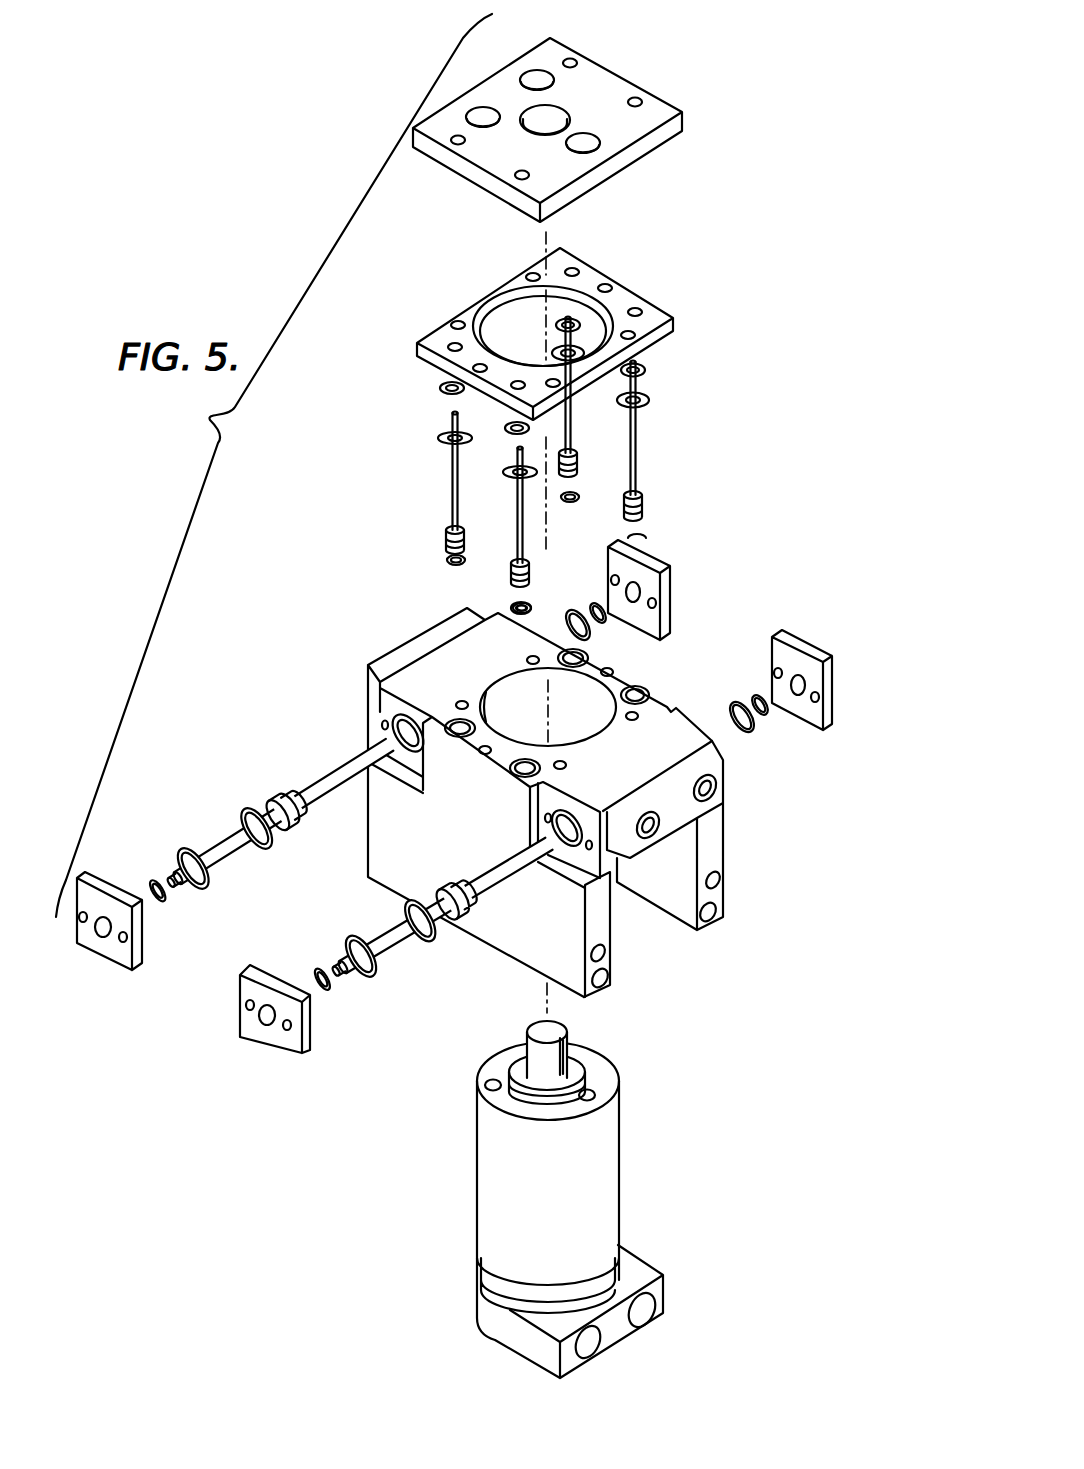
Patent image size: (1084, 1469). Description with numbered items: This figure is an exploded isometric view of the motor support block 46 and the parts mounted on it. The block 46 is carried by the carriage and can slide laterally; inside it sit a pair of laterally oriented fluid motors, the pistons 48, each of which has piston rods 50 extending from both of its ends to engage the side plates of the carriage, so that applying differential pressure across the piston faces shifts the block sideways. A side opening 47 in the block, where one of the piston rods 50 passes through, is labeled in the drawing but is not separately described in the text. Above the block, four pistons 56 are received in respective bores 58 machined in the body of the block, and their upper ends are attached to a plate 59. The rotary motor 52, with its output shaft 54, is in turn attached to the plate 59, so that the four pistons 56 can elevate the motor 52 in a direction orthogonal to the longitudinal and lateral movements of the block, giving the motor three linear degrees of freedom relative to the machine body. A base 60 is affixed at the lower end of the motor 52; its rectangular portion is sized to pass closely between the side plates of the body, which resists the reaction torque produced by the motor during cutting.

The motor support block 46 is at (727, 783).
The port hole 47 is at (408, 733).
The pistons 48 is at (288, 790).
The piston rods 50 is at (217, 842).
The rotary motor 52 is at (561, 1198).
The output shaft 54 is at (550, 1032).
The pistons 56 is at (465, 533).
The bores 58 is at (477, 724).
The plate 59 is at (652, 111).
The base 60 is at (642, 1265).